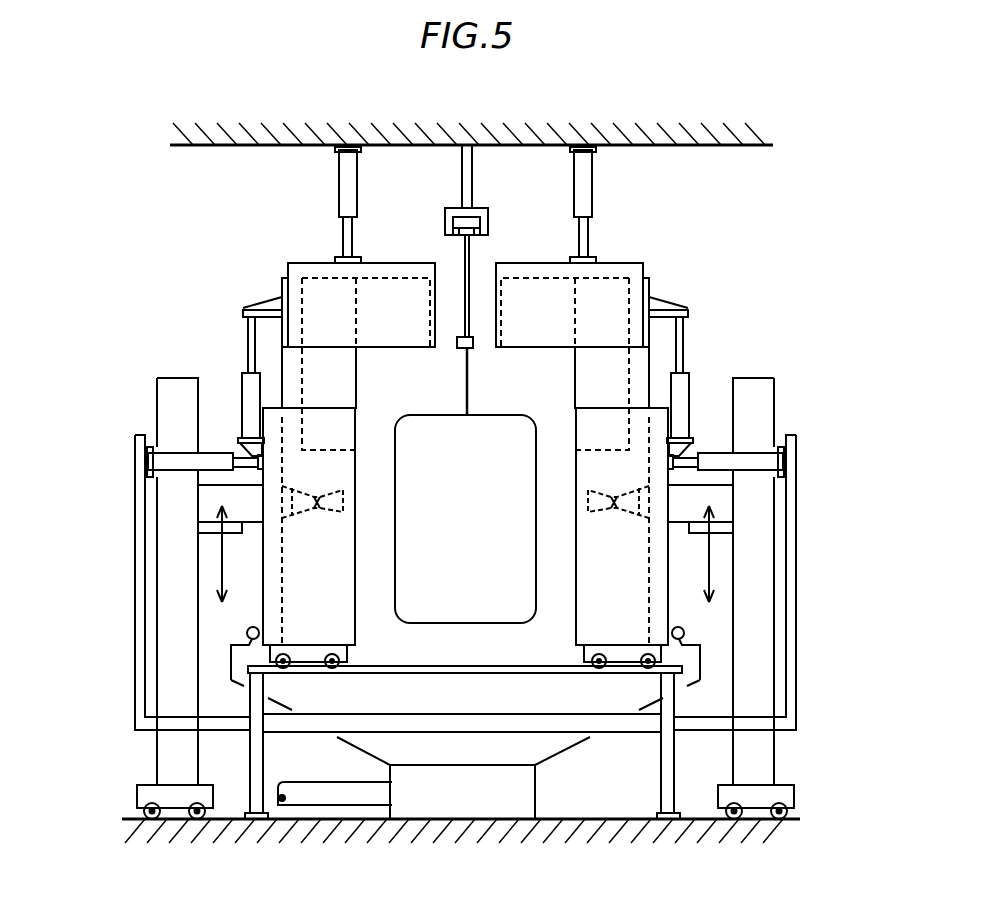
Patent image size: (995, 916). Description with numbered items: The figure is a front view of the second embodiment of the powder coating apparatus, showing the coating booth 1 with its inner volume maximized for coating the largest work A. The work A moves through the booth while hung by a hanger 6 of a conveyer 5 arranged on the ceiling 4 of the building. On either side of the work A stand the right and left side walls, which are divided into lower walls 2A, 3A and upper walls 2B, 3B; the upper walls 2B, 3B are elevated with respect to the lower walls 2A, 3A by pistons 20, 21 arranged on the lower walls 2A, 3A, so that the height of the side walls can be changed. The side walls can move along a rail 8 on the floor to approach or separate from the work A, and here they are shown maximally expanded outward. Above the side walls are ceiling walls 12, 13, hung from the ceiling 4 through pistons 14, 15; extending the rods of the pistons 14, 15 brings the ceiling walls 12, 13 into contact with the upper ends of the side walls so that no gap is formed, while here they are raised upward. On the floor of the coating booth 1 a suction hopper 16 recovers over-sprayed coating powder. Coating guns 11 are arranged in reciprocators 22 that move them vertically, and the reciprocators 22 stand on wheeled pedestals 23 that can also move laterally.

The coating booth 1 is at (648, 284).
The lower wall 2A is at (295, 606).
The upper wall 2B is at (317, 377).
The lower wall 3A is at (636, 606).
The upper wall 3B is at (614, 377).
The ceiling 4 is at (733, 146).
The conveyer 5 is at (488, 226).
The hanger 6 is at (468, 263).
The rail 8 is at (378, 668).
The coating gun 11 is at (207, 498).
The ceiling wall 12 is at (323, 268).
The ceiling wall 13 is at (625, 263).
The piston 14 is at (348, 178).
The piston 15 is at (585, 172).
The suction hopper 16 is at (425, 740).
The piston 20 is at (250, 390).
The piston 21 is at (683, 390).
The reciprocator 22 is at (170, 515).
The pedestal 23 is at (140, 790).
The work A is at (462, 452).